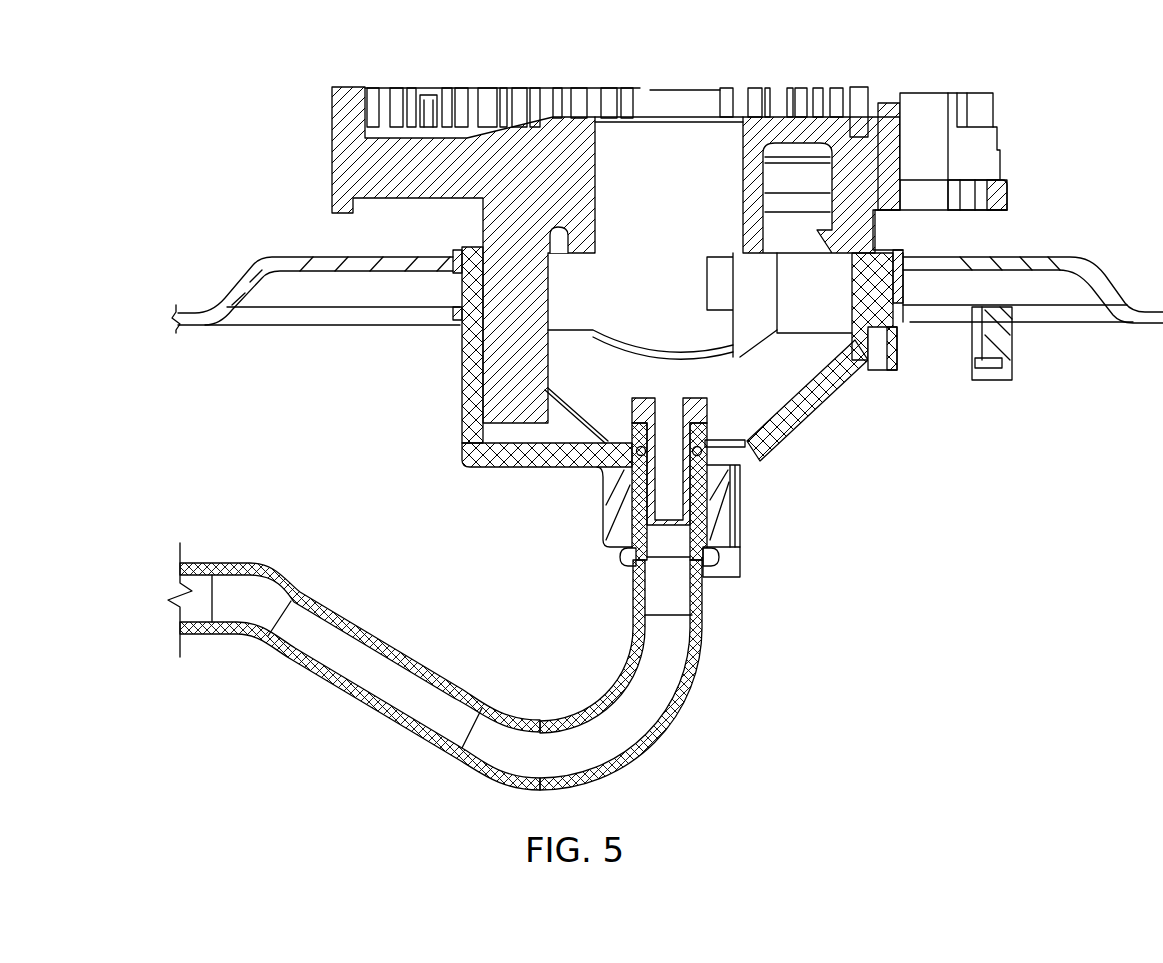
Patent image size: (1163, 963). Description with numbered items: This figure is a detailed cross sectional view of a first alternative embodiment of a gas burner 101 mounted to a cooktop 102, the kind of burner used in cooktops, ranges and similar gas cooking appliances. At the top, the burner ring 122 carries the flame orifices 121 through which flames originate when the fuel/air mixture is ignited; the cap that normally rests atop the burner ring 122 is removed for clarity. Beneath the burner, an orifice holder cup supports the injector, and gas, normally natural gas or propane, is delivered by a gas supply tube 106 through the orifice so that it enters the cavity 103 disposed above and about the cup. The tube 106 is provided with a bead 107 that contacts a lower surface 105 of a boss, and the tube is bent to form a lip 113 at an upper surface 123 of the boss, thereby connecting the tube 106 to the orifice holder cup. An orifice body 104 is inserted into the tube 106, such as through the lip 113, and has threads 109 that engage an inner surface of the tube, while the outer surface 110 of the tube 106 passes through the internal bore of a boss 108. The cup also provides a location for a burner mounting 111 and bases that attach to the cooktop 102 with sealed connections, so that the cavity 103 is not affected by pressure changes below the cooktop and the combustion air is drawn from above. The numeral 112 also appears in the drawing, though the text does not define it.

The burner 101 is at (374, 228).
The cooktop 102 is at (355, 270).
The cavity 103 is at (772, 378).
The orifice body 104 is at (746, 447).
The lower surface 105 is at (740, 552).
The gas supply tube 106 is at (702, 618).
The bead 107 is at (627, 562).
The boss 108 is at (624, 540).
The threads 109 is at (637, 502).
The outer surface 110 is at (630, 469).
The burner mounting 111 is at (870, 232).
The inner layer 112 is at (453, 275).
The lip 113 is at (740, 477).
The flame orifices 121 is at (440, 88).
The burner ring 122 is at (1013, 151).
The upper surface 123 is at (731, 443).